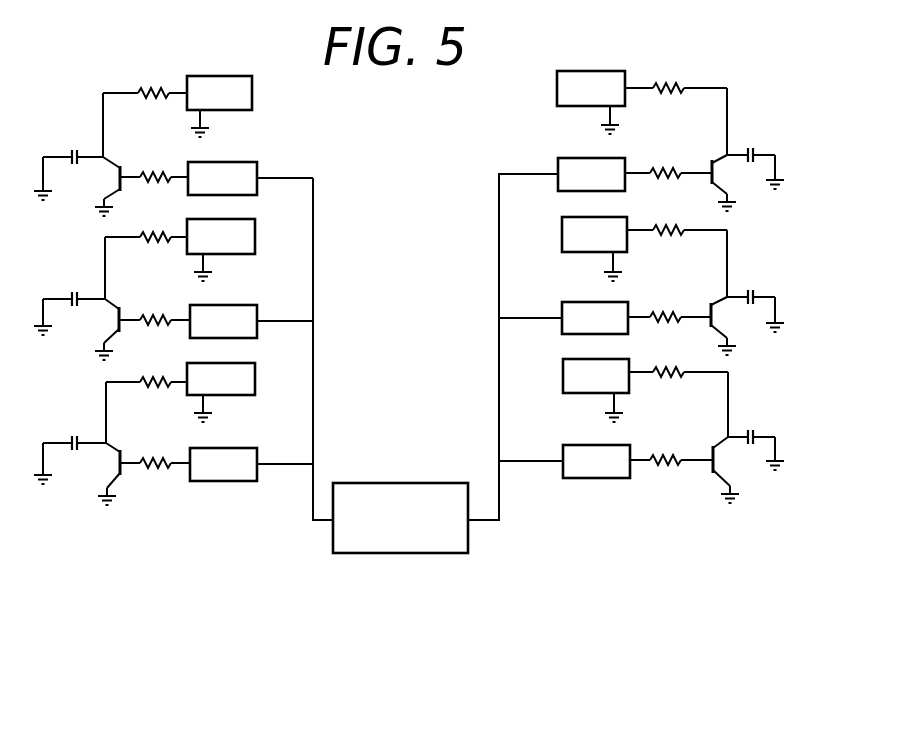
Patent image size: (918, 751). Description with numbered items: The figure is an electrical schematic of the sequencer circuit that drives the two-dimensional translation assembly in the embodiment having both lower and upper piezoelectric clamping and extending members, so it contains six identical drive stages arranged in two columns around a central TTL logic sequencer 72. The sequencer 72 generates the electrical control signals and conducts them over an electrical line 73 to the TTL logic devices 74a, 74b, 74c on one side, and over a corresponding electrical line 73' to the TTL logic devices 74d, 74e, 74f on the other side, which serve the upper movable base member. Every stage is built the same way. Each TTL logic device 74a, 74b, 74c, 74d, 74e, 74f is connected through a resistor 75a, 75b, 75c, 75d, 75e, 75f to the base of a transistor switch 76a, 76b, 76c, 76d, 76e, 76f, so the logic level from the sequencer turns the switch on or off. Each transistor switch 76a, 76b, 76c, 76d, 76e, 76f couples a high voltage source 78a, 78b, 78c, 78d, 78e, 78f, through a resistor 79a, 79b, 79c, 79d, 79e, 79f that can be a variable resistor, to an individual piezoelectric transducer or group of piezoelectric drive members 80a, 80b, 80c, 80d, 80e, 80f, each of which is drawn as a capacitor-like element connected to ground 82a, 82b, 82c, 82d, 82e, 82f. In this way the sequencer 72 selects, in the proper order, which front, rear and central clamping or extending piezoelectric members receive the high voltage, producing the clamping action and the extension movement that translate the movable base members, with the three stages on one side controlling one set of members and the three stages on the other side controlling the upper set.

The TTL logic sequencer 72 is at (400, 483).
The electrical line 73 is at (464, 346).
The electrical line 73' is at (362, 349).
The TTL logic device 74a is at (572, 158).
The TTL logic device 74b is at (585, 302).
The TTL logic device 74c is at (585, 445).
The TTL logic device 74d is at (243, 162).
The TTL logic device 74e is at (222, 305).
The TTL logic device 74f is at (228, 448).
The resistor 75a is at (662, 172).
The resistor 75b is at (672, 317).
The resistor 75c is at (668, 458).
The resistor 75d is at (160, 172).
The resistor 75e is at (160, 318).
The resistor 75f is at (163, 460).
The transistor switch 76a is at (710, 180).
The transistor switch 76b is at (708, 322).
The transistor switch 76c is at (712, 466).
The transistor switch 76d is at (124, 163).
The transistor switch 76e is at (113, 322).
The transistor switch 76f is at (114, 468).
The high voltage source 78a is at (577, 71).
The high voltage source 78b is at (594, 249).
The high voltage source 78c is at (578, 361).
The high voltage source 78d is at (232, 76).
The high voltage source 78e is at (228, 232).
The high voltage source 78f is at (230, 363).
The resistor 79a is at (672, 85).
The resistor 79b is at (657, 222).
The resistor 79c is at (665, 372).
The resistor 79d is at (146, 88).
The resistor 79e is at (156, 238).
The resistor 79f is at (155, 381).
The piezoelectric drive member 80a is at (752, 146).
The piezoelectric drive member 80b is at (752, 288).
The piezoelectric drive member 80c is at (752, 428).
The piezoelectric drive member 80d is at (70, 152).
The piezoelectric drive member 80e is at (73, 290).
The piezoelectric drive member 80f is at (77, 437).
The ground 82a is at (778, 165).
The ground 82b is at (780, 314).
The ground 82c is at (780, 452).
The ground 82d is at (53, 187).
The ground 82e is at (40, 314).
The ground 82f is at (40, 462).